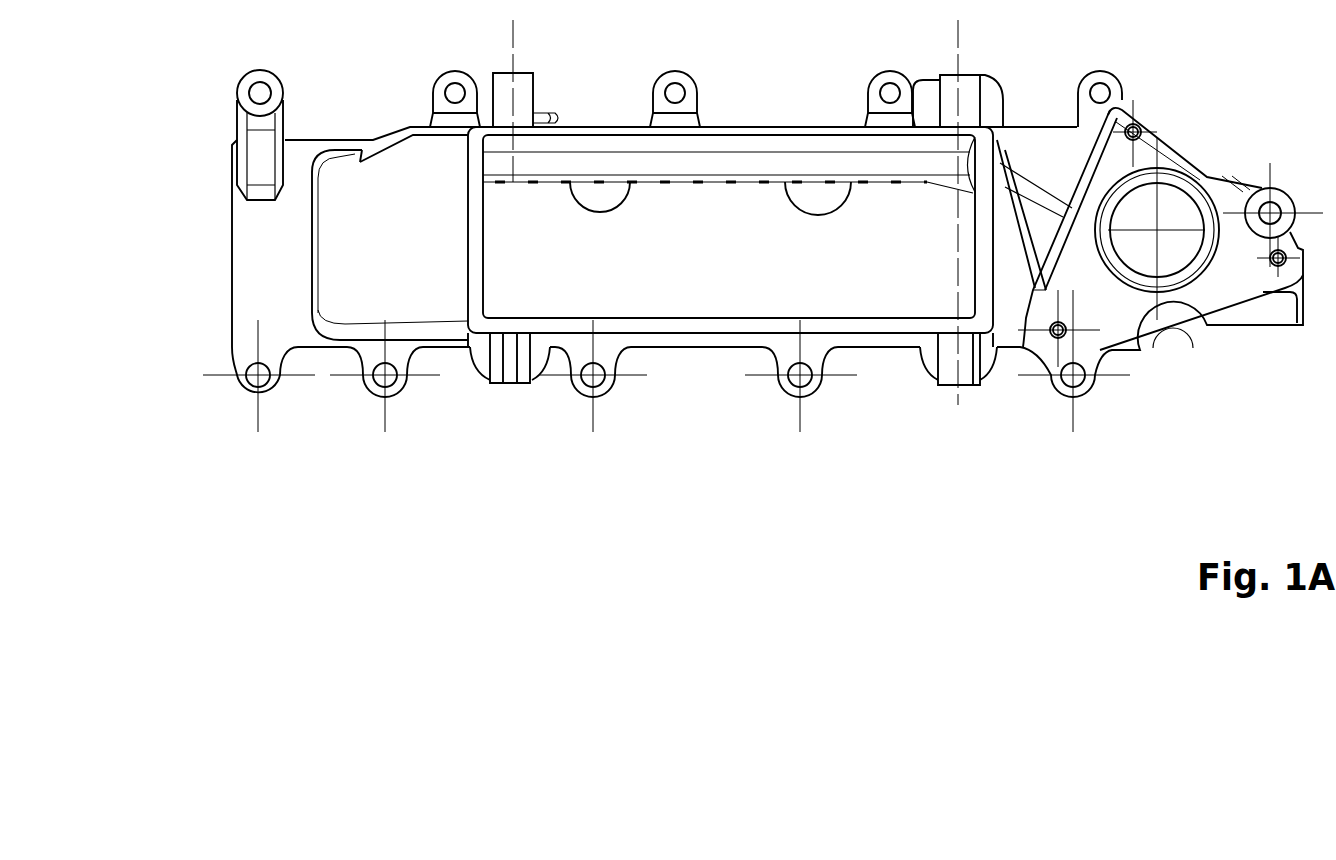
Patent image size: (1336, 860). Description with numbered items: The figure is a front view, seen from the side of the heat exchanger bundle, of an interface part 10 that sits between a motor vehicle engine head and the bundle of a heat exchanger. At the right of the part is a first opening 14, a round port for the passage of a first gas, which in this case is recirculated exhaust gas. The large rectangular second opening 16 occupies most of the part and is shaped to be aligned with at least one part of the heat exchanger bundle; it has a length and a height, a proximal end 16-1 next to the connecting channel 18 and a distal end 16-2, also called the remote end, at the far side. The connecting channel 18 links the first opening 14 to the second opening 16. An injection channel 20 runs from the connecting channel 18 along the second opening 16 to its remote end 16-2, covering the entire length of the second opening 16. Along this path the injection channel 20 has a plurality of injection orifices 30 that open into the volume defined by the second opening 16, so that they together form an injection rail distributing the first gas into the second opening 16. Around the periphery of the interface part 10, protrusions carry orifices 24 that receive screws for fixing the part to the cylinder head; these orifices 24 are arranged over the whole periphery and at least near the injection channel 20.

The interface part 10 is at (731, 287).
The first opening 14 is at (1182, 212).
The second opening 16 is at (640, 237).
The proximal end 16-1 is at (487, 283).
The distal end 16-2 is at (306, 250).
The connecting channel 18 is at (1047, 157).
The injection channel 20 is at (758, 160).
The orifices 24 is at (823, 402).
The injection orifices 30 is at (585, 183).